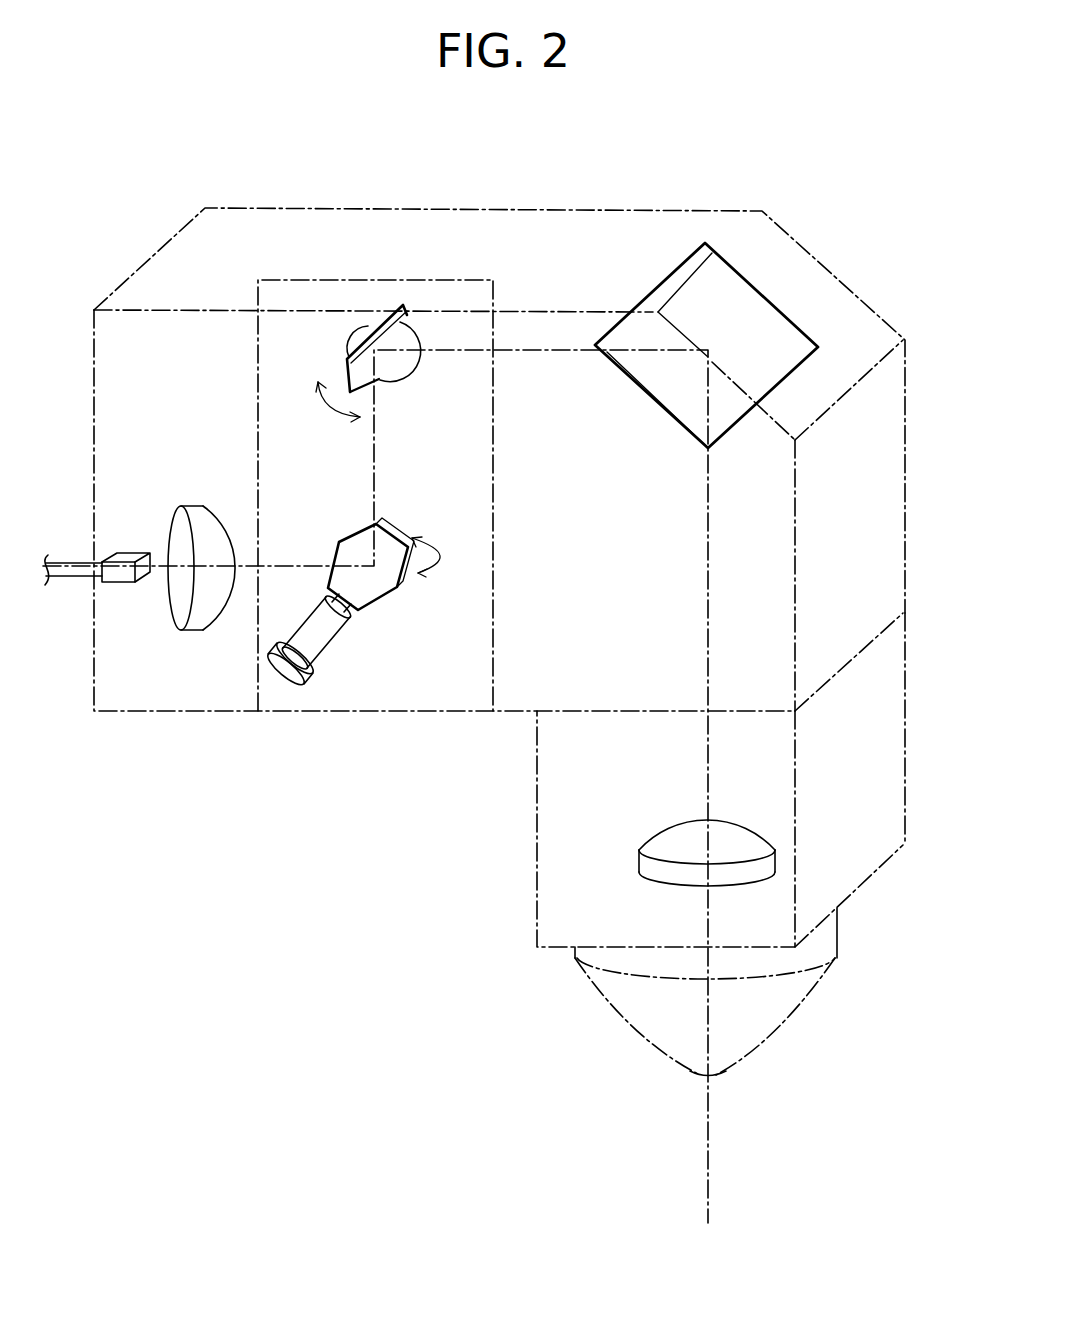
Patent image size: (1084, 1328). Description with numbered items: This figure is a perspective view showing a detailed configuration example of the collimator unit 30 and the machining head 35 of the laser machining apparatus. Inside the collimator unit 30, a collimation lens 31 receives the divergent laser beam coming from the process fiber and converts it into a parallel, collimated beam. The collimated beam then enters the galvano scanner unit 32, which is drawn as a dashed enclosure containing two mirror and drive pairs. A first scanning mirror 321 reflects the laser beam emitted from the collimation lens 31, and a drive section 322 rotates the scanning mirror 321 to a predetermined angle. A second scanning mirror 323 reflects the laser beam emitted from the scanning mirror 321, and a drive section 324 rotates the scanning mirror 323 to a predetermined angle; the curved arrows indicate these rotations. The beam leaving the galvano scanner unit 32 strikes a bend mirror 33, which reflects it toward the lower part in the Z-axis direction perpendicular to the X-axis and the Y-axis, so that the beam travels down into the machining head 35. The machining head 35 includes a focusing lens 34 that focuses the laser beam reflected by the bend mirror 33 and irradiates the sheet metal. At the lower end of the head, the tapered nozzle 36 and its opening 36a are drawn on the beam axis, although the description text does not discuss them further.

The collimator unit 30 is at (578, 230).
The collimation lens 31 is at (193, 502).
The galvano scanner unit 32 is at (352, 712).
The scanning mirror 321 is at (356, 540).
The drive section 322 is at (320, 653).
The scanning mirror 323 is at (398, 327).
The drive section 324 is at (353, 332).
The bend mirror 33 is at (690, 262).
The focusing lens 34 is at (755, 830).
The machining head 35 is at (872, 780).
The nozzle 36 is at (803, 998).
The nozzle opening 36a is at (713, 1077).